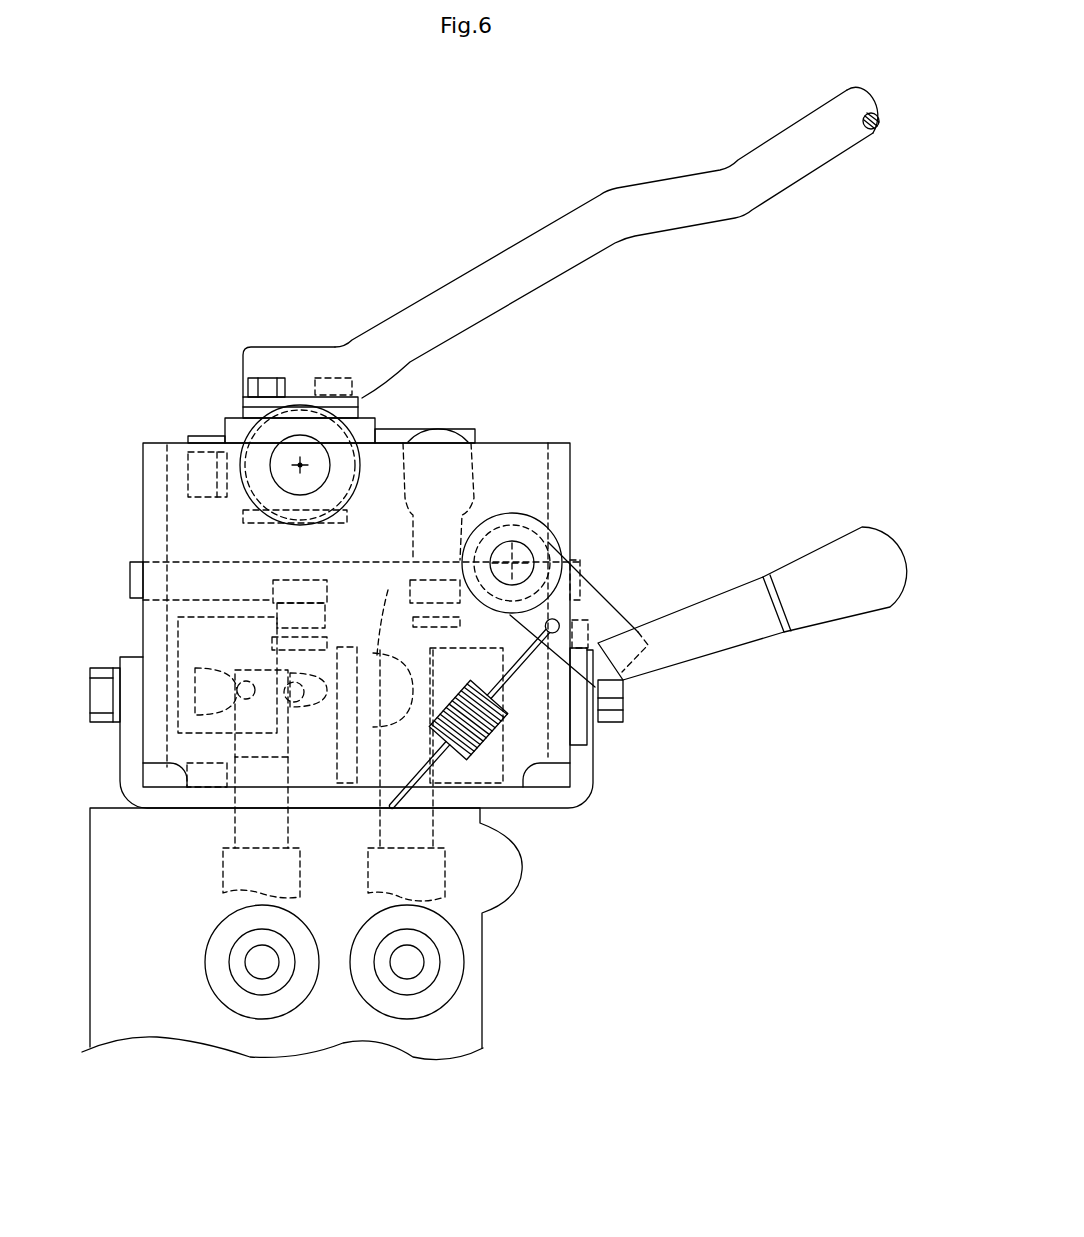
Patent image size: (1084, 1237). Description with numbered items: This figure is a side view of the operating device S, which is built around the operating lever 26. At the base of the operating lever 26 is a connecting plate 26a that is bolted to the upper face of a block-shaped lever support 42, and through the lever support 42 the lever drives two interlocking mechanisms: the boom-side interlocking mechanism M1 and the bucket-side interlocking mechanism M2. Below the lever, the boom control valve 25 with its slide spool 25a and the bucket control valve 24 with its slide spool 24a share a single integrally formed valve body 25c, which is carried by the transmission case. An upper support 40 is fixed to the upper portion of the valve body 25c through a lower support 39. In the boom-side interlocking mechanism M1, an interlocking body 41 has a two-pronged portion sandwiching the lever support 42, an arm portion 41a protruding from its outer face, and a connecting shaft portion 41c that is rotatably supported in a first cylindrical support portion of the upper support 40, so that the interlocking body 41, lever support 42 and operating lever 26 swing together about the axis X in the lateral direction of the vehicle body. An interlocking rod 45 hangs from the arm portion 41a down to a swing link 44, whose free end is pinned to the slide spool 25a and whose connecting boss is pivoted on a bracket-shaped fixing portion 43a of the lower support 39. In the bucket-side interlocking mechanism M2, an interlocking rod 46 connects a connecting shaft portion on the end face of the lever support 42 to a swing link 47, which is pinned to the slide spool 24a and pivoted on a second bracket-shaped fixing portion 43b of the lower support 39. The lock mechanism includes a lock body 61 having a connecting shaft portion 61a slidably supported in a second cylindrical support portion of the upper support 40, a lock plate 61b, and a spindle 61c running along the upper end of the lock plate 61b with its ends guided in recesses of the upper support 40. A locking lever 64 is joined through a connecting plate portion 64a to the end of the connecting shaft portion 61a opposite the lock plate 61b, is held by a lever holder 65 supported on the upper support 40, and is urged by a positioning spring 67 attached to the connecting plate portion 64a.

The operating device S is at (298, 198).
The operating lever 26 is at (657, 185).
The connecting plate 26a is at (353, 408).
The upper support 40 is at (570, 468).
The lower support 39 is at (577, 790).
The interlocking body 41 is at (227, 425).
The arm portion 41a is at (475, 437).
The connecting shaft portion 41c is at (302, 437).
The lever support 42 is at (243, 410).
The swing link 44 is at (497, 690).
The interlocking rod 45 is at (433, 432).
The interlocking rod 46 is at (335, 546).
The swing link 47 is at (327, 674).
The lock body 61 is at (179, 640).
The connecting shaft portion 61a is at (520, 555).
The lock plate 61b is at (163, 723).
The spindle 61c is at (130, 578).
The locking lever 64 is at (822, 550).
The connecting plate portion 64a is at (603, 597).
The lever holder 65 is at (623, 700).
The positioning spring 67 is at (447, 755).
The fixing portion 43a is at (525, 778).
The fixing portion 43b is at (323, 790).
The bucket control valve 24 is at (223, 946).
The slide spool 24a is at (222, 873).
The boom control valve 25 is at (485, 946).
The slide spool 25a is at (445, 873).
The valve body 25c is at (483, 975).
The axis X is at (300, 465).
The boom-side interlocking mechanism M1 is at (471, 438).
The bucket-side interlocking mechanism M2 is at (278, 548).